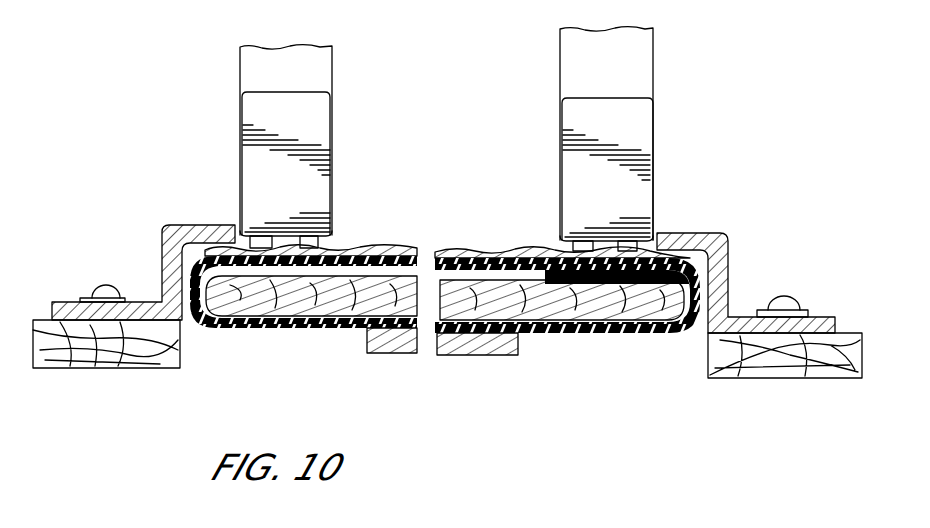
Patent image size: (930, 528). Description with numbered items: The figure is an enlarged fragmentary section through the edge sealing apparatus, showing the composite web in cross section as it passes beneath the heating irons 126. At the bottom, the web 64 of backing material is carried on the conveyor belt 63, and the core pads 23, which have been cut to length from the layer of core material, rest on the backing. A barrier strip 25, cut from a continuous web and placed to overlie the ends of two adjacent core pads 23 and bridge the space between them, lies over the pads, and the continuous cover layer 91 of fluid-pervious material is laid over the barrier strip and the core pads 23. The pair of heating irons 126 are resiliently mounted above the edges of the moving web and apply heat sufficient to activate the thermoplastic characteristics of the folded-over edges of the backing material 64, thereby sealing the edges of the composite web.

The heating irons 126 is at (245, 118).
The barrier strips 25 is at (384, 253).
The cover layer 91 is at (468, 255).
The web of backing material 64 is at (318, 330).
The conveyor belt 63 is at (400, 354).
The core pads 23 is at (585, 333).